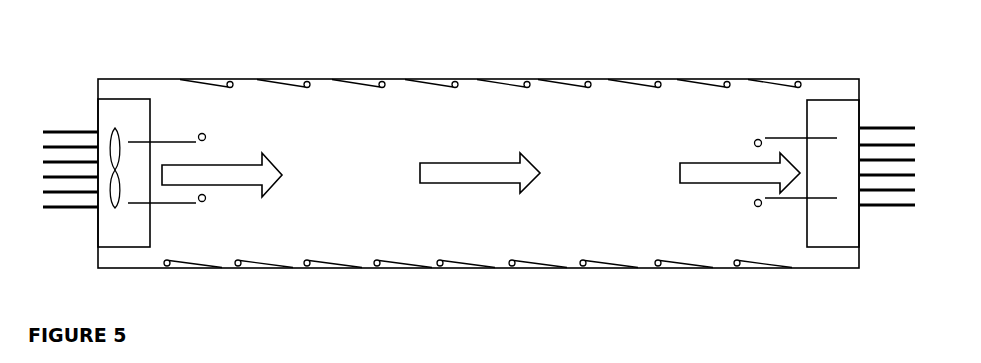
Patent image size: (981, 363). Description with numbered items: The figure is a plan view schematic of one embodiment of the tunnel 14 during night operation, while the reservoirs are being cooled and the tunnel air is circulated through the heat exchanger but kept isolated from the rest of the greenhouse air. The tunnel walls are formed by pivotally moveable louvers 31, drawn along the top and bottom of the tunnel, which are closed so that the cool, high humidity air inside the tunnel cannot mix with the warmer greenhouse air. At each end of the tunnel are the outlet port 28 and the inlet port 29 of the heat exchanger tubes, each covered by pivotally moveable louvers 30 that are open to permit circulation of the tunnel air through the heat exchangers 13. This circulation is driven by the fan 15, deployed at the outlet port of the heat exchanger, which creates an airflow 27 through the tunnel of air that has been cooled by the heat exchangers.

The heat exchangers 13 is at (70, 182).
The tunnel 14 is at (478, 156).
The fan 15 is at (118, 180).
The airflow 27 is at (480, 165).
The outlet port 28 is at (152, 173).
The inlet port 29 is at (835, 173).
The pivotally moveable louvers 30 is at (167, 210).
The pivotally moveable louvers 31 is at (482, 174).